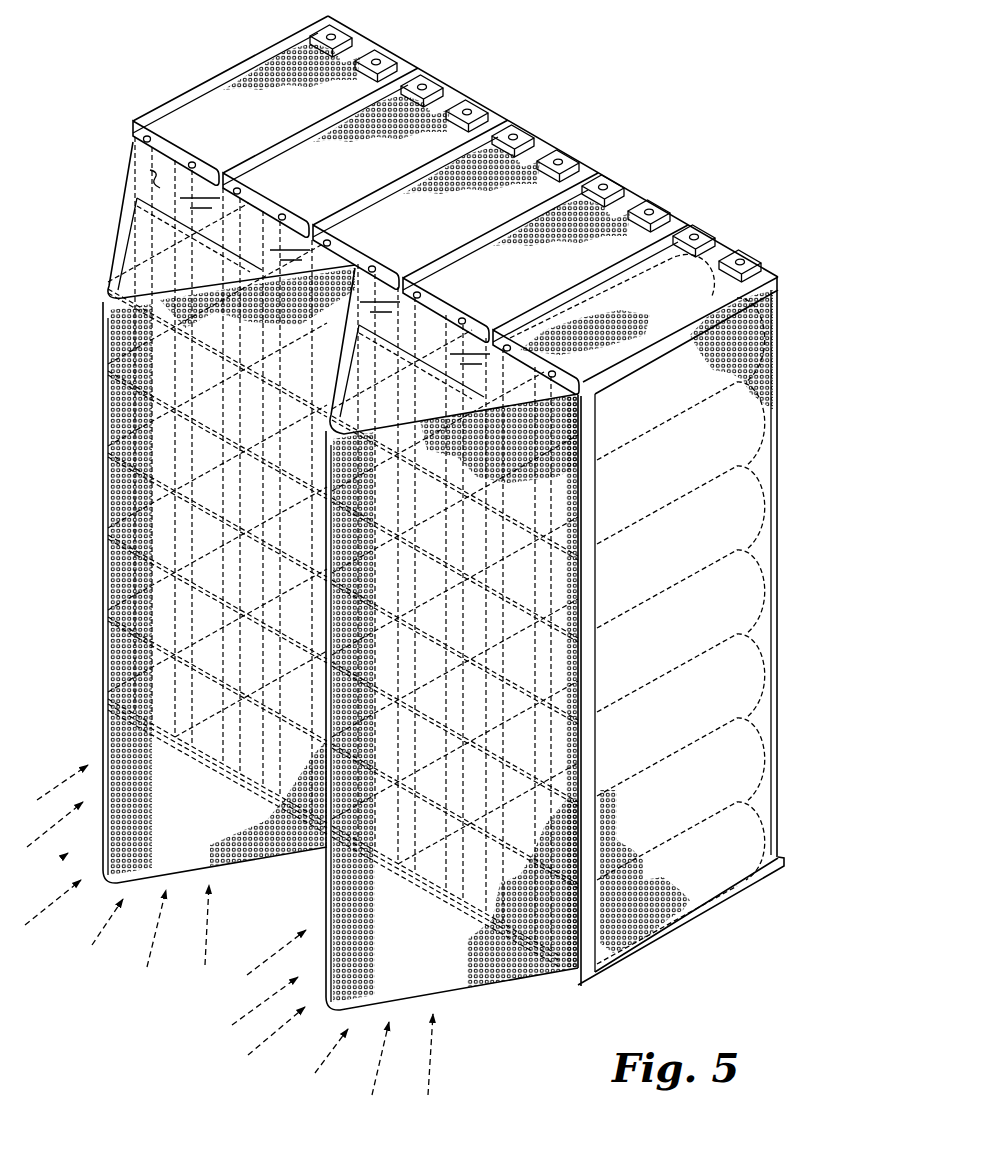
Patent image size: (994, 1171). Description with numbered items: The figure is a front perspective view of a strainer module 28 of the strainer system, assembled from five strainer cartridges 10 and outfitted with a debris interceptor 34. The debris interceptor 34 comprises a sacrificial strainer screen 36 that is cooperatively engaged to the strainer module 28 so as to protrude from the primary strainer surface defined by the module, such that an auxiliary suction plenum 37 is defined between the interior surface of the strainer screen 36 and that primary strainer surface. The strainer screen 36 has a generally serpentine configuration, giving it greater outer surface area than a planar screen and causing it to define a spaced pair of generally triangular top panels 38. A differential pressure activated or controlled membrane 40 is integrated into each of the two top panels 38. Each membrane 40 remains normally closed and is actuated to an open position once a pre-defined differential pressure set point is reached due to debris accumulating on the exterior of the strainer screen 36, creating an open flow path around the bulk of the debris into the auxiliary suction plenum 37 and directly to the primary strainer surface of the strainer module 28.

The strainer cartridge 10 is at (572, 136).
The strainer module 28 is at (803, 345).
The debris interceptor 34 is at (509, 995).
The sacrificial strainer screen 36 is at (252, 875).
The auxiliary suction plenum 37 is at (146, 167).
The top panel 38 is at (152, 213).
The membrane 40 is at (146, 246).